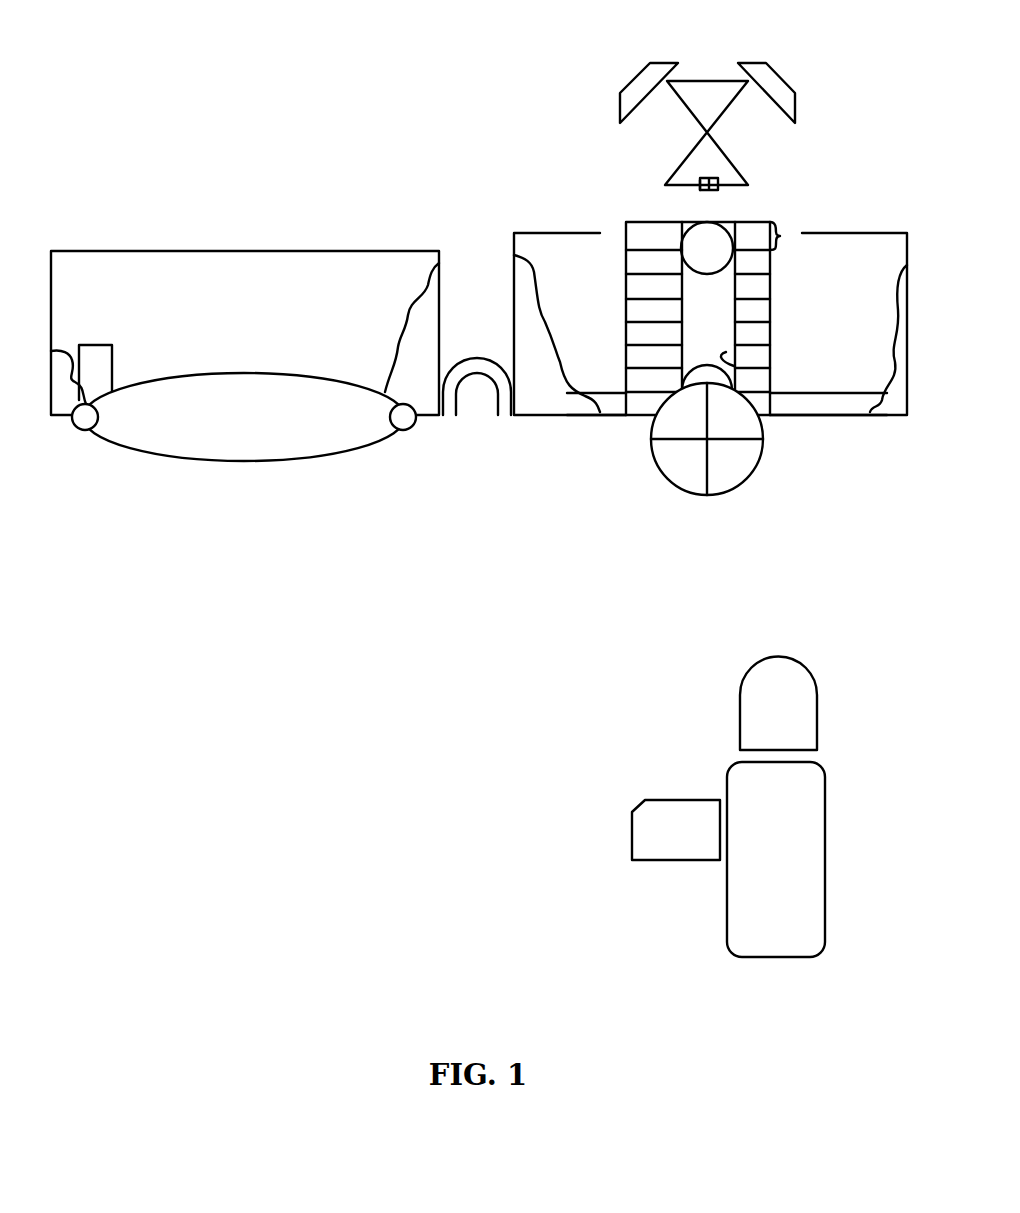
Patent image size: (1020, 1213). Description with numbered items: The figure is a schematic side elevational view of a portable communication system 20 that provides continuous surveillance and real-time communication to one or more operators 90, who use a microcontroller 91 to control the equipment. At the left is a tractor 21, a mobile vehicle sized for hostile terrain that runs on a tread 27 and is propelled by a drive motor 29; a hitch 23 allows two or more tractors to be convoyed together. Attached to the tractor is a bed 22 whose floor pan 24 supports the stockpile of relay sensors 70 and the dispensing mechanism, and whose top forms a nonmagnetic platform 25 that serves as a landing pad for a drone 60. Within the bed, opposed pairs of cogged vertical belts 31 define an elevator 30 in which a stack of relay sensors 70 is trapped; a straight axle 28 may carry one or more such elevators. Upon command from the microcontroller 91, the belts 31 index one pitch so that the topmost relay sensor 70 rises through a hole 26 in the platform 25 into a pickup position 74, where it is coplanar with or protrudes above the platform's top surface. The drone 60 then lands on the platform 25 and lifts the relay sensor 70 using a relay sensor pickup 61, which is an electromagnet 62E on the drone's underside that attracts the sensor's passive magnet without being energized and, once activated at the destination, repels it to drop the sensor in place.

The communication system 20 is at (258, 519).
The tractor 21 is at (157, 250).
The bed 22 is at (908, 243).
The hitch 23 is at (476, 355).
The floor pan 24 is at (613, 402).
The platform 25 is at (538, 233).
The hole 26 is at (610, 238).
The tread 27 is at (343, 443).
The straight axle 28 is at (687, 465).
The drive motor 29 is at (98, 358).
The elevator 30 is at (718, 297).
The belt 31 is at (734, 366).
The drone 60 is at (786, 53).
The relay sensor pickup 61 is at (700, 195).
The electromagnet 62E is at (712, 193).
The relay sensor 70 is at (757, 285).
The pickup position 74 is at (780, 236).
The operator 90 is at (823, 825).
The microcontroller 91 is at (676, 820).